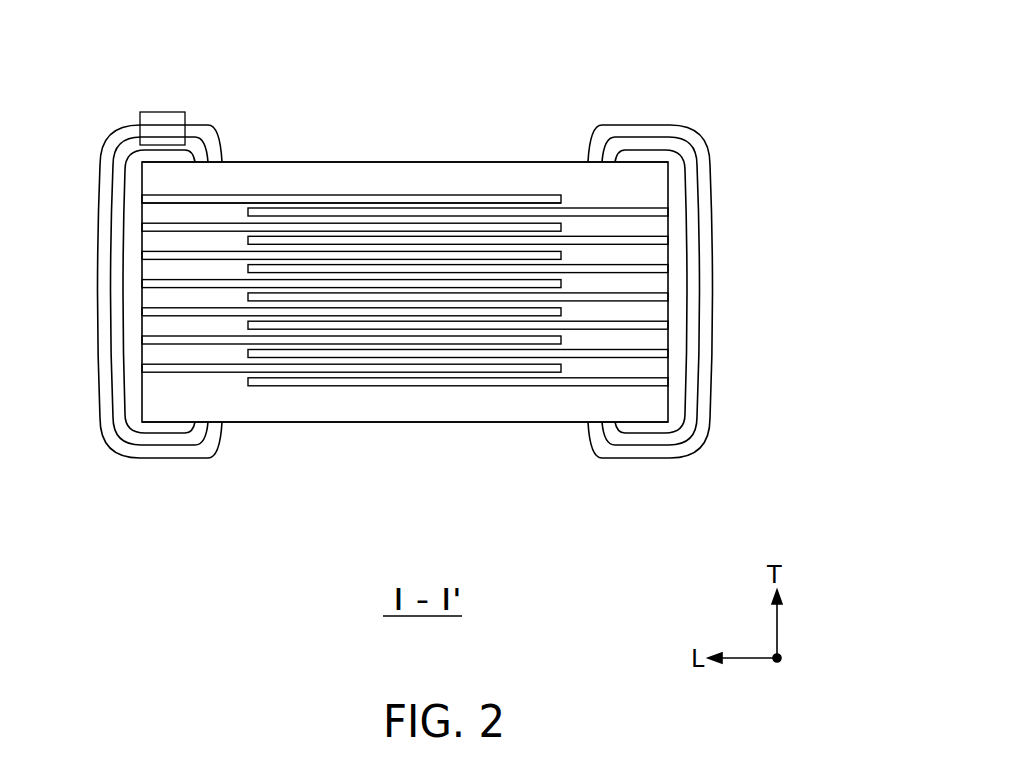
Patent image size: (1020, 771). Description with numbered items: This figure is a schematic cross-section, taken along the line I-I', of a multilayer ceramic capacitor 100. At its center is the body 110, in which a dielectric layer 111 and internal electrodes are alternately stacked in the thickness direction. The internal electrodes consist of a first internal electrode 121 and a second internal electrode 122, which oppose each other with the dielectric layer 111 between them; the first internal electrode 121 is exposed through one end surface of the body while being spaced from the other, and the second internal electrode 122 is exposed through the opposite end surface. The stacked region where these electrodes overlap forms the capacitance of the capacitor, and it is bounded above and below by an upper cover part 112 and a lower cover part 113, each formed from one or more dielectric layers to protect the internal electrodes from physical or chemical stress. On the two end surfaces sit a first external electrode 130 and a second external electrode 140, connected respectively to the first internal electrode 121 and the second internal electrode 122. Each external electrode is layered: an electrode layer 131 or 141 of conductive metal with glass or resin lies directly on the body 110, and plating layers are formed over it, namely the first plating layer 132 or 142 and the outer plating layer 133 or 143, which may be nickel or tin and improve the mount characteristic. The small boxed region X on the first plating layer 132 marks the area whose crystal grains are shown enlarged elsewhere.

The multilayer ceramic capacitor 100 is at (435, 36).
The body 110 is at (370, 422).
The dielectric layer 111 is at (380, 203).
The upper cover part 112 is at (533, 172).
The lower cover part 113 is at (477, 410).
The first internal electrode 121 is at (312, 200).
The second internal electrode 122 is at (443, 210).
The first external electrode 130 is at (245, 536).
The electrode layer 131 is at (178, 428).
The first plating layer 132 is at (160, 440).
The plating layer 133 is at (142, 452).
The second external electrode 140 is at (722, 536).
The electrode layer 141 is at (632, 428).
The first plating layer 142 is at (648, 440).
The plating layer 143 is at (670, 452).
The region X is at (162, 112).